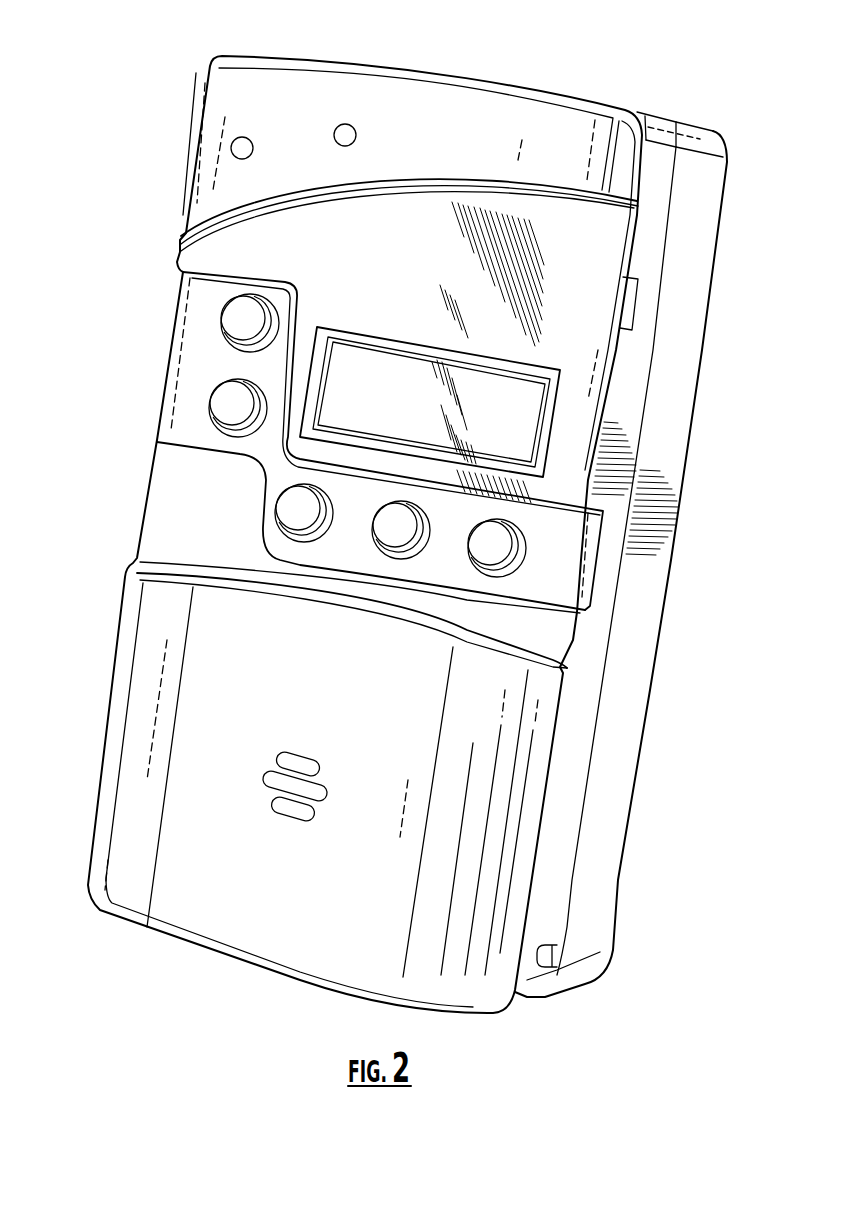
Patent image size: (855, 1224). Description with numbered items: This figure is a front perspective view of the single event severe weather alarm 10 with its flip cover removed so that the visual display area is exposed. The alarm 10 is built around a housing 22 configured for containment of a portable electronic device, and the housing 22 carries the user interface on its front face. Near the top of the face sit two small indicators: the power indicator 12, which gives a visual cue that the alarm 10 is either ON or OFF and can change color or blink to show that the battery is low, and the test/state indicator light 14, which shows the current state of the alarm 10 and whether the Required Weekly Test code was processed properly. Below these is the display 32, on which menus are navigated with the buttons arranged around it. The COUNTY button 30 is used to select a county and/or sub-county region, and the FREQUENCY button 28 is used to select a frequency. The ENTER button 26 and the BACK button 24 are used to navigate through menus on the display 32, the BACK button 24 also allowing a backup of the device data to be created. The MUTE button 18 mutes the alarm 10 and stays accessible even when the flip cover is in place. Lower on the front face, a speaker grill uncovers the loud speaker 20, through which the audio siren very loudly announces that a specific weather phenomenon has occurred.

The single event severe weather alarm 10 is at (88, 86).
The power indicator 12 is at (227, 147).
The test/state indicator light 14 is at (348, 124).
The mute button 18 is at (500, 545).
The loud speaker 20 is at (267, 780).
The housing 22 is at (707, 210).
The BACK button 24 is at (395, 528).
The ENTER button 26 is at (292, 516).
The FREQUENCY button 28 is at (228, 412).
The COUNTY button 30 is at (228, 320).
The display 32 is at (523, 430).